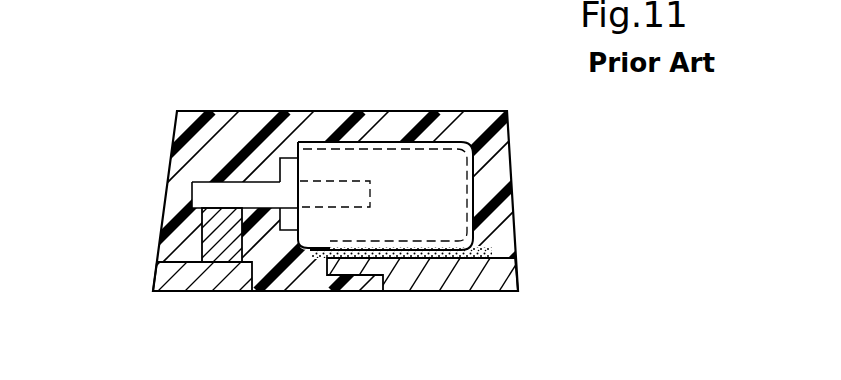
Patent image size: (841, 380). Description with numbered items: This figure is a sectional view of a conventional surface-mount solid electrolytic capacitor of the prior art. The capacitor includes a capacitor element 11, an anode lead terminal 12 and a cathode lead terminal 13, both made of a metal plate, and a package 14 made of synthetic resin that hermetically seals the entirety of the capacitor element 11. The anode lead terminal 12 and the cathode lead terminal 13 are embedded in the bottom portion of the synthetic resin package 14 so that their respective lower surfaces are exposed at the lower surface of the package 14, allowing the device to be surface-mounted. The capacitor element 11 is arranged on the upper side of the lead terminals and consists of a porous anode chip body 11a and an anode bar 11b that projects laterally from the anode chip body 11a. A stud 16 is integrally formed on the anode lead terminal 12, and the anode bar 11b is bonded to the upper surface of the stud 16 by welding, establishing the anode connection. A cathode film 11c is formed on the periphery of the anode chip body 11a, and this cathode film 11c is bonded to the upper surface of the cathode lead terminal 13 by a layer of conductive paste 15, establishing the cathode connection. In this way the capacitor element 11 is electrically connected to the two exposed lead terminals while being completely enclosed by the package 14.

The capacitor element 11 is at (374, 140).
The porous anode chip body 11a is at (429, 160).
The anode bar 11b is at (250, 190).
The cathode film 11c is at (334, 140).
The anode lead terminal 12 is at (207, 283).
The cathode lead terminal 13 is at (462, 282).
The package 14 is at (503, 170).
The conductive paste 15 is at (490, 248).
The stud 16 is at (213, 237).